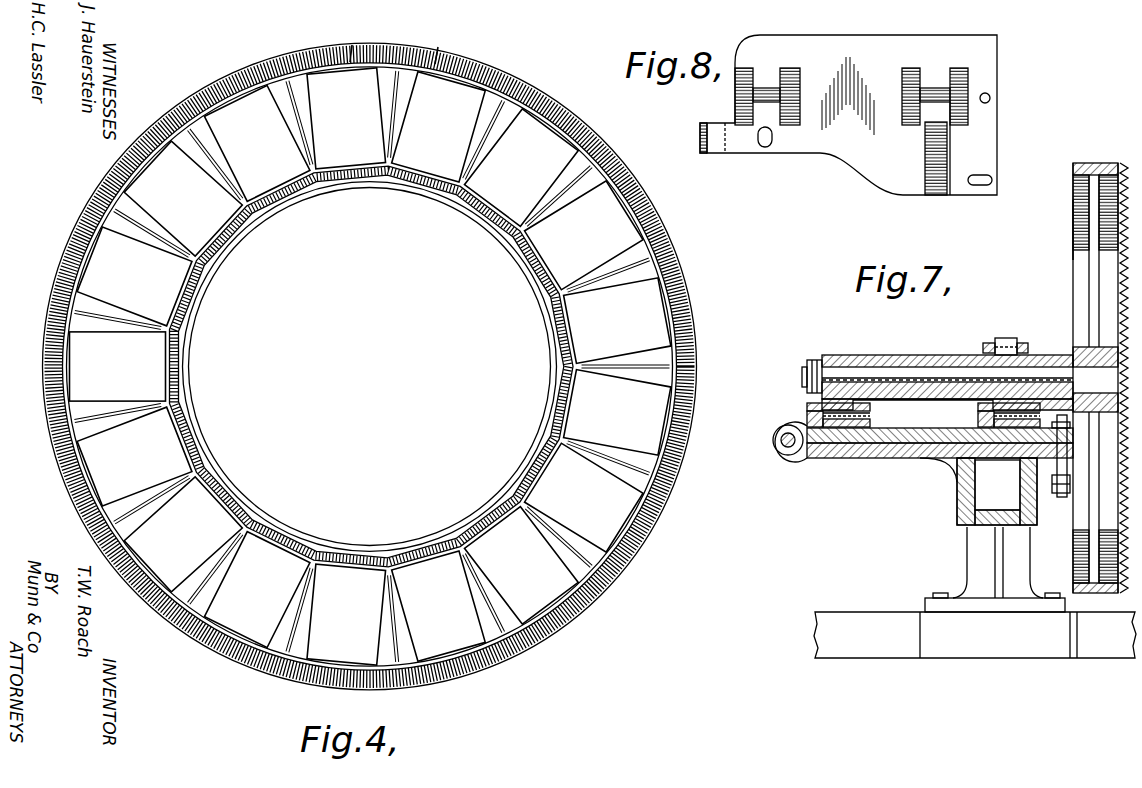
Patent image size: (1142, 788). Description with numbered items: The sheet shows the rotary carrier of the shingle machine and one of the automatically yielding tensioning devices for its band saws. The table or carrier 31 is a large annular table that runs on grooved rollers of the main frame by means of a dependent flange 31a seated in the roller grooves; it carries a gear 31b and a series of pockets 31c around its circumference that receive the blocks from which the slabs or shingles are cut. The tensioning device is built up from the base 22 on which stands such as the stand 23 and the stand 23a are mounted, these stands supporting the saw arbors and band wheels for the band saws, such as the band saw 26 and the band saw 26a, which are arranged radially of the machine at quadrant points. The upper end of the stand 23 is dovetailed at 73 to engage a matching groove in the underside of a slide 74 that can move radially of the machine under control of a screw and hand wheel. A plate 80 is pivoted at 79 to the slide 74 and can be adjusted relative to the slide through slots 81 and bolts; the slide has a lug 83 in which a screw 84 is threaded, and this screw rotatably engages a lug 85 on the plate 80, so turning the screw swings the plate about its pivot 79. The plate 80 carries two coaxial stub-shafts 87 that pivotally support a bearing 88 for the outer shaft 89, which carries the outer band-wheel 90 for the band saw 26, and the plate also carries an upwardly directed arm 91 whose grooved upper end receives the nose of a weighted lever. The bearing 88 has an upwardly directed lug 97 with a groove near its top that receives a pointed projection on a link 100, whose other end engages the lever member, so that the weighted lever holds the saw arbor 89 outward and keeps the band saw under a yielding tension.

In FIG. 4, the table or carrier 31 is at (206, 89).
In FIG. 4, the dependent flange 31a is at (351, 60).
In FIG. 4, the gear 31b is at (436, 56).
In FIG. 4, the pockets 31c is at (371, 366).
In FIG. 7, the base 22 is at (877, 658).
In FIG. 7, the stand 23 is at (966, 560).
In FIG. 7, the stand 23a is at (964, 582).
In FIG. 7, the band saw 26 is at (1079, 165).
In FIG. 7, the band saw 26a is at (1123, 168).
In FIG. 7, the dovetail 73 is at (950, 470).
In FIG. 7, the slide 74 is at (882, 460).
In FIG. 8, the pivot 79 is at (991, 98).
In FIG. 7, the pivot 79 is at (1060, 423).
In FIG. 8, the plate 80 is at (856, 163).
In FIG. 7, the plate 80 is at (928, 433).
In FIG. 8, the slots 81 is at (765, 149).
In FIG. 7, the lug 83 is at (786, 453).
In FIG. 7, the screw 84 is at (783, 436).
In FIG. 8, the lug 85 is at (717, 150).
In FIG. 8, the stub-shafts 87 is at (768, 96).
In FIG. 7, the stub-shafts 87 is at (810, 412).
In FIG. 7, the bearing 88 is at (890, 401).
In FIG. 7, the outer shaft 89 is at (901, 374).
In FIG. 7, the outer band-wheel 90 is at (1073, 205).
In FIG. 8, the upwardly directed arm 91 is at (935, 170).
In FIG. 7, the upwardly directed lug 97 is at (1003, 340).
In FIG. 7, the link 100 is at (1021, 345).